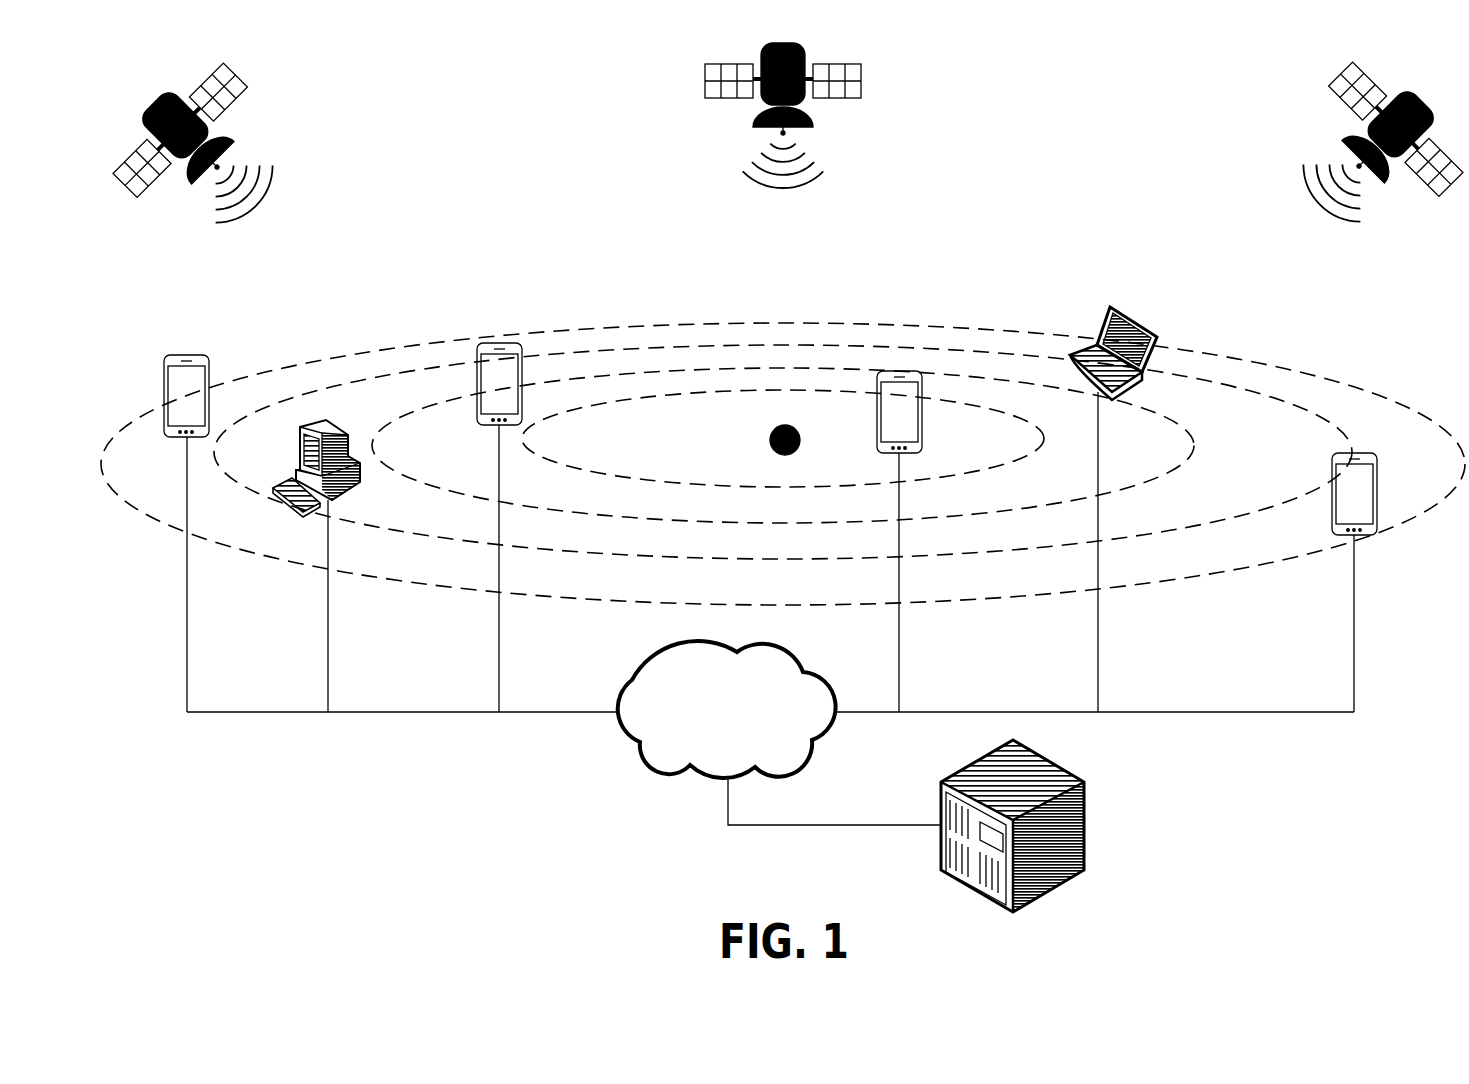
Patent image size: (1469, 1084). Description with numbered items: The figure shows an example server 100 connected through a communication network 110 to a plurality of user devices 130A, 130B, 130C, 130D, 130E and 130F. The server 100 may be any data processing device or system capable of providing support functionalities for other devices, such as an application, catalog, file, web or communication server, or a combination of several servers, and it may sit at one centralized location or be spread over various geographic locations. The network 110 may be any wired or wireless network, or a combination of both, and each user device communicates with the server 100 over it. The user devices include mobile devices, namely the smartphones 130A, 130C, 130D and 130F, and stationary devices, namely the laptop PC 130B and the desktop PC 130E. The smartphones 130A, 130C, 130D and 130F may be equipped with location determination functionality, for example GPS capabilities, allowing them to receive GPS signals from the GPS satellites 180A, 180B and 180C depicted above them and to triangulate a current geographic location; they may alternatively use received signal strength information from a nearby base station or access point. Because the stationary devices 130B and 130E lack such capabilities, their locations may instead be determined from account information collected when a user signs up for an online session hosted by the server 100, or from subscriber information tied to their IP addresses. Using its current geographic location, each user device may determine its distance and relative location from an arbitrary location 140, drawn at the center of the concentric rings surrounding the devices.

The server 100 is at (1086, 810).
The communication network 110 is at (658, 768).
The smartphone 130A is at (188, 352).
The laptop PC 130B is at (350, 443).
The smartphone 130C is at (500, 343).
The smartphone 130D is at (898, 370).
The desktop PC 130E is at (1127, 310).
The smartphone 130F is at (1345, 452).
The arbitrary location 140 is at (768, 437).
The GPS satellite 180A is at (222, 110).
The GPS satellite 180B is at (843, 100).
The GPS satellite 180C is at (1340, 112).